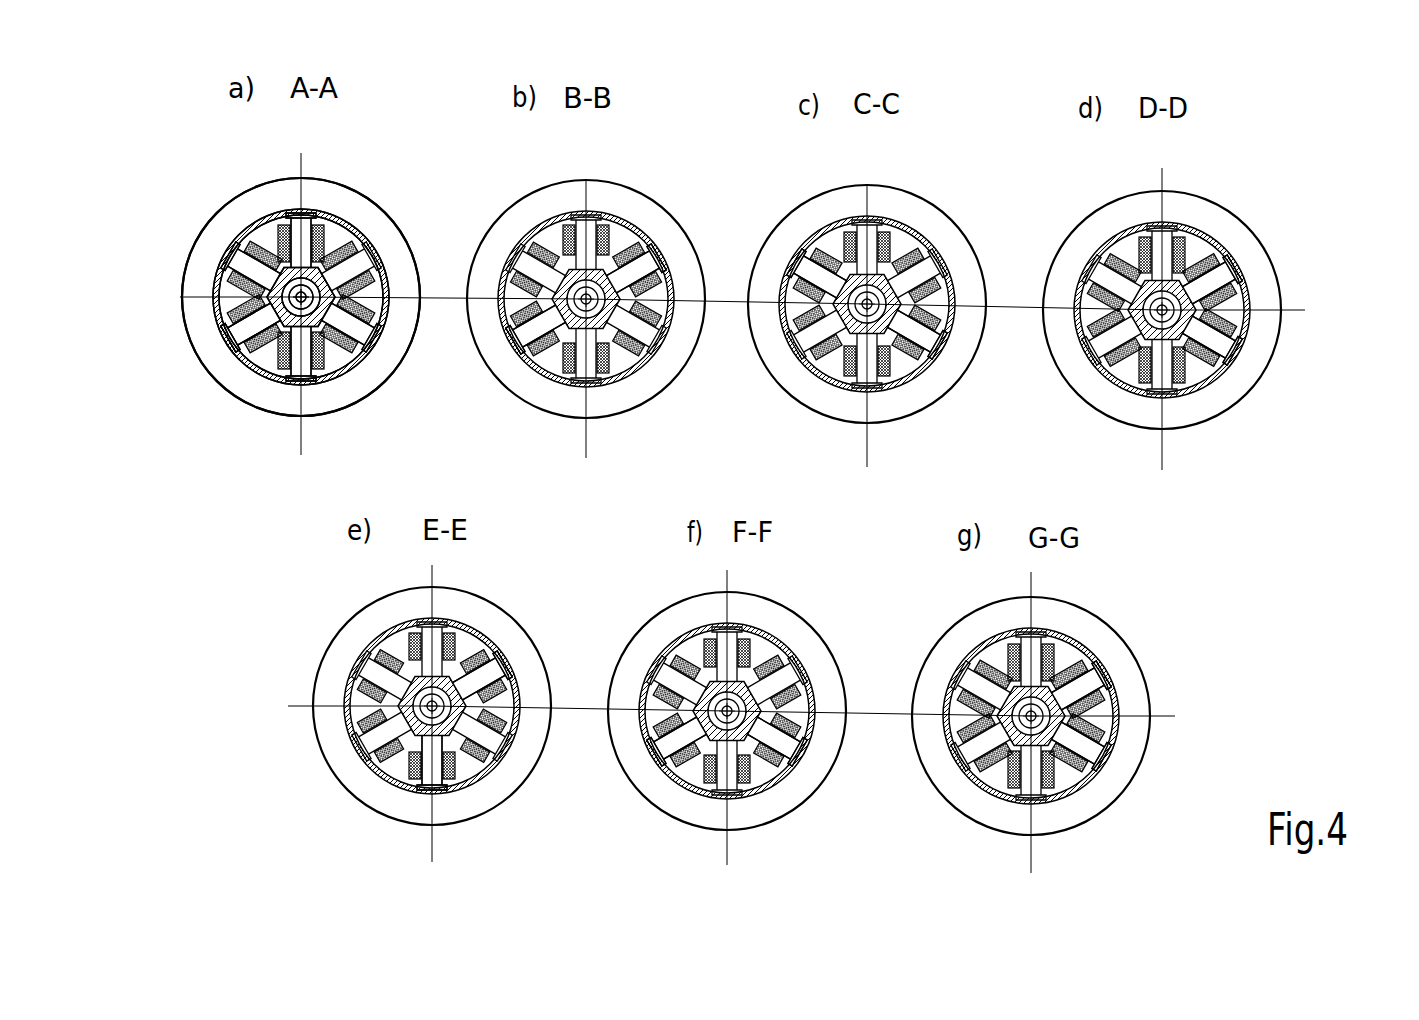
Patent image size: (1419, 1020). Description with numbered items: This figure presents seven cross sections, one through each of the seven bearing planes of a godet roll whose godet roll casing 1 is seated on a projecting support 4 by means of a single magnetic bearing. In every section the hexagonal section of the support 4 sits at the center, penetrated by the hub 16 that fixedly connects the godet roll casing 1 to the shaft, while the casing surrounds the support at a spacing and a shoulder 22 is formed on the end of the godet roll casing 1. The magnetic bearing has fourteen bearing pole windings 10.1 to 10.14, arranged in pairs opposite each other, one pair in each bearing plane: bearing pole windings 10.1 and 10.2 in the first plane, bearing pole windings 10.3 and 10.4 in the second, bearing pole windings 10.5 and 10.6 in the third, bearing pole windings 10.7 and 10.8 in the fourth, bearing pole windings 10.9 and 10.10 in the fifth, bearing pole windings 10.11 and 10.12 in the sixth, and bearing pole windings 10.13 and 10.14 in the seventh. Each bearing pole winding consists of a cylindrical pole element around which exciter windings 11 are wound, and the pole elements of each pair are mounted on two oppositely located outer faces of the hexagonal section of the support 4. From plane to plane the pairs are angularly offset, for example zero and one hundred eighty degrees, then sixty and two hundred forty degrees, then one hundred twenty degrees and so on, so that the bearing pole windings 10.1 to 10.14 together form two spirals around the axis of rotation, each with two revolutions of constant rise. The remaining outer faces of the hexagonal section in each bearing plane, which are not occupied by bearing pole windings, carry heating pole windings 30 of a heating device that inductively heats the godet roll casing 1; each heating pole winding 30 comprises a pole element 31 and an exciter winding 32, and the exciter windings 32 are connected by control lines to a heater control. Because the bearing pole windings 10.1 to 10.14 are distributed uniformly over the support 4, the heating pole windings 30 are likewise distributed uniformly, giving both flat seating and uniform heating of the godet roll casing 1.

The godet roll casing 1 is at (347, 227).
The projecting support 4 is at (317, 228).
The exciter windings 11 is at (318, 370).
The hub 16 is at (328, 268).
The shoulder 22 is at (202, 248).
The heating pole windings 30 is at (253, 317).
The pole element 31 is at (242, 328).
The exciter winding 32 is at (252, 357).
The bearing pole winding 10.1 is at (265, 235).
The bearing pole winding 10.2 is at (380, 382).
The bearing pole winding 10.3 is at (625, 237).
The bearing pole winding 10.4 is at (597, 386).
The bearing pole winding 10.5 is at (798, 219).
The bearing pole winding 10.6 is at (938, 390).
The bearing pole winding 10.7 is at (1192, 250).
The bearing pole winding 10.8 is at (1195, 372).
The bearing pole winding 10.9 is at (467, 650).
The bearing pole winding 10.10 is at (395, 765).
The bearing pole winding 10.11 is at (649, 806).
The bearing pole winding 10.12 is at (765, 775).
The bearing pole winding 10.13 is at (1063, 652).
The bearing pole winding 10.14 is at (1128, 808).